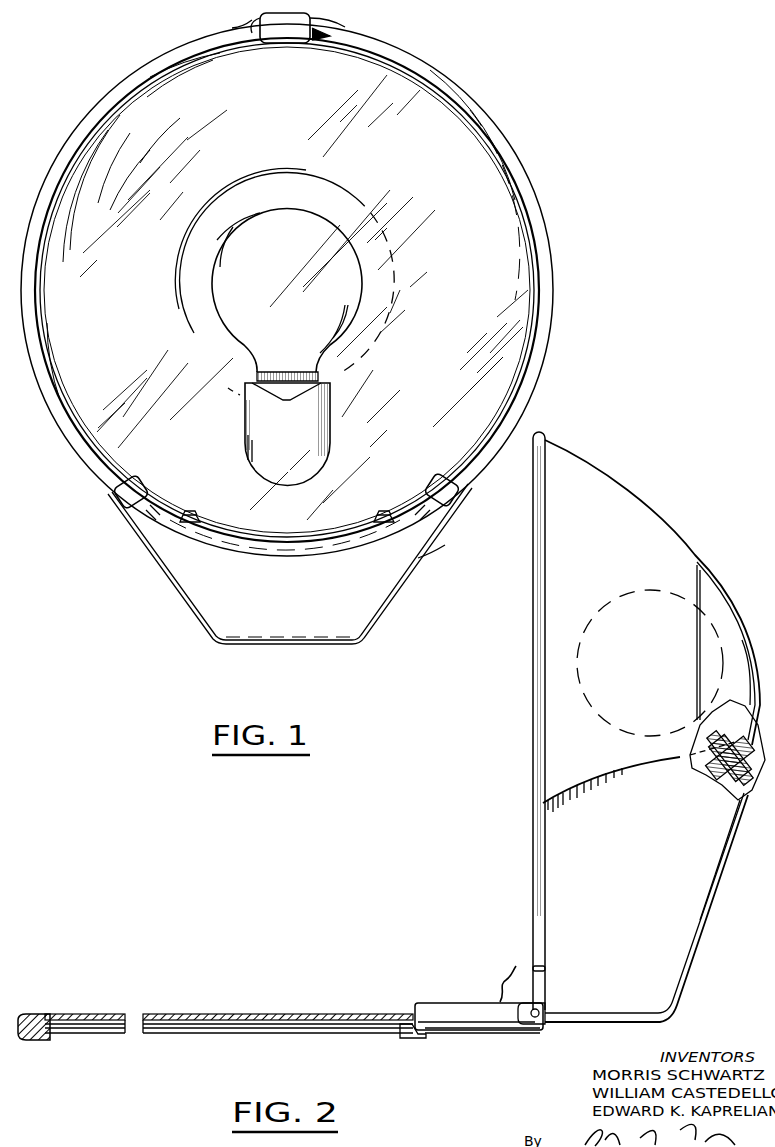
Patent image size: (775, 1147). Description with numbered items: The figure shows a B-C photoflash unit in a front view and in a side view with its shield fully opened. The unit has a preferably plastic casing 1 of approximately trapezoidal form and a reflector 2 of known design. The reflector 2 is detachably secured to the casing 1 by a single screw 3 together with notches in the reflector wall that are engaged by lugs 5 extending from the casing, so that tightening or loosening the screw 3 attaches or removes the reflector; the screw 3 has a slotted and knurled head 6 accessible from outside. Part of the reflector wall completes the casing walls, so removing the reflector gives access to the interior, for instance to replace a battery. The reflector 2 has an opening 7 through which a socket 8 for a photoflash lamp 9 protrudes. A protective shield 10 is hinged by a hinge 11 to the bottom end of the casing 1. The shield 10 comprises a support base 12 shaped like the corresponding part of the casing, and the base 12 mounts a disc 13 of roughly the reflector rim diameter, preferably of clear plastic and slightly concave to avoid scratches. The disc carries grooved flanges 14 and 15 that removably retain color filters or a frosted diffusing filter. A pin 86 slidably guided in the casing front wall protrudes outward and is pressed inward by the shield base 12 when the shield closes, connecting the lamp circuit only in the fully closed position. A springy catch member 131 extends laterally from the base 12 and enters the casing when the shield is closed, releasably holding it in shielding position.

In FIG. 2, the casing 1 is at (712, 925).
In FIG. 2, the reflector 2 is at (620, 495).
In FIG. 2, the screw 3 is at (720, 742).
In FIG. 1, the lugs 5 is at (190, 508).
In FIG. 2, the head 6 is at (748, 790).
In FIG. 1, the opening 7 is at (328, 453).
In FIG. 1, the socket 8 is at (313, 413).
In FIG. 1, the photoflash lamp 9 is at (240, 276).
In FIG. 2, the photoflash lamp 9 is at (612, 604).
In FIG. 1, the protective shield 10 is at (182, 589).
In FIG. 2, the protective shield 10 is at (448, 1000).
In FIG. 2, the hinge 11 is at (540, 1010).
In FIG. 1, the support base 12 is at (400, 560).
In FIG. 2, the support base 12 is at (467, 1035).
In FIG. 1, the disc 13 is at (508, 192).
In FIG. 2, the disc 13 is at (265, 1014).
In FIG. 1, the grooved flange 14 is at (300, 25).
In FIG. 2, the grooved flange 14 is at (32, 1040).
In FIG. 1, the grooved flange 15 is at (134, 478).
In FIG. 2, the grooved flange 15 is at (410, 1040).
In FIG. 2, the pin 86 is at (535, 965).
In FIG. 2, the springy catch member 131 is at (506, 978).